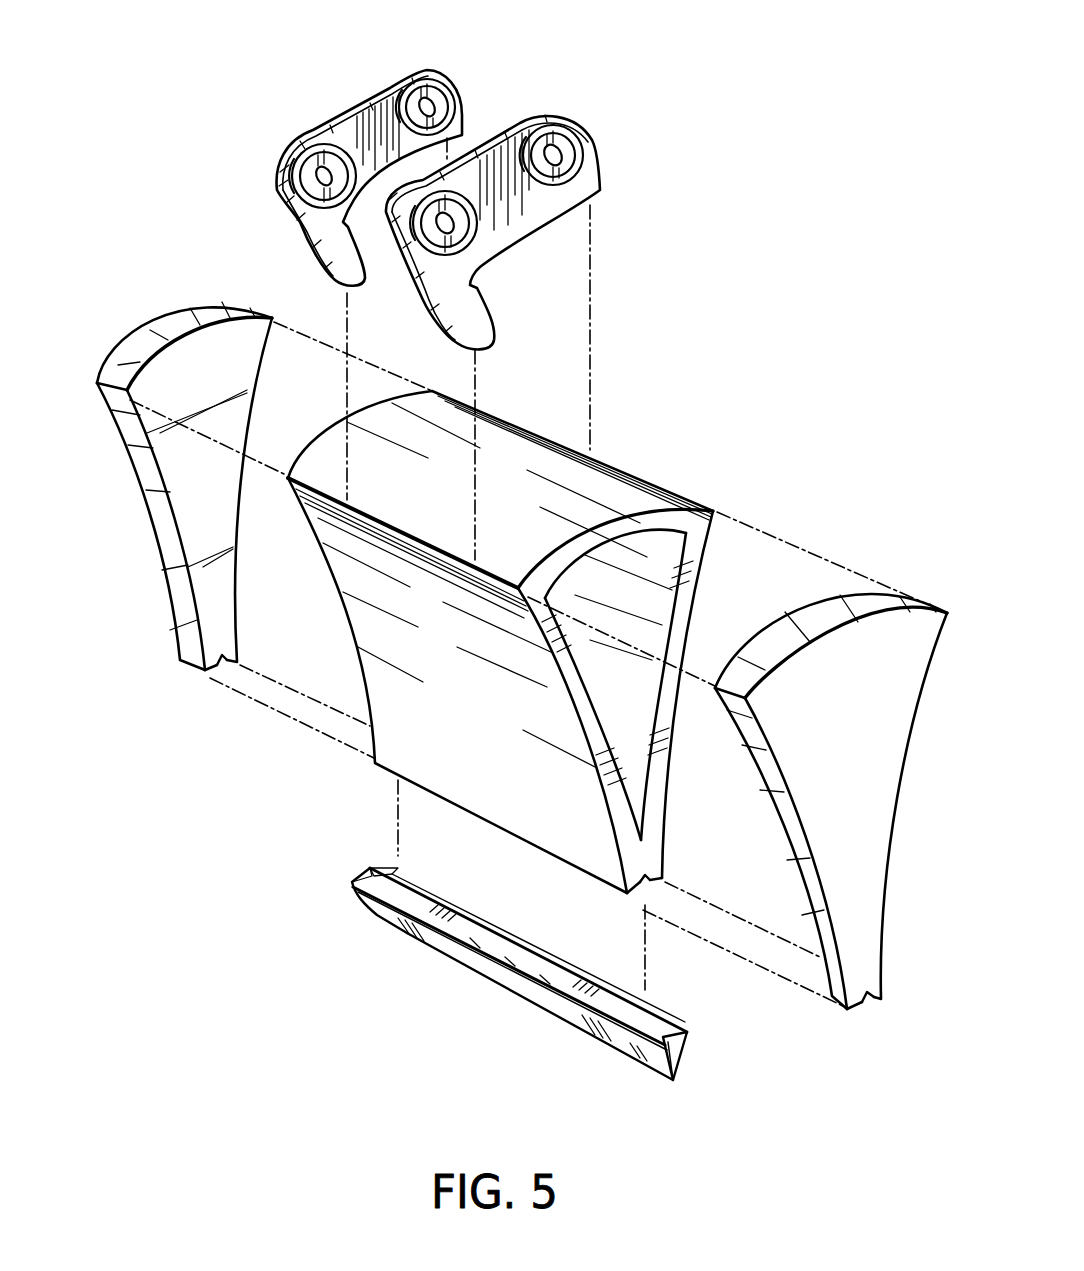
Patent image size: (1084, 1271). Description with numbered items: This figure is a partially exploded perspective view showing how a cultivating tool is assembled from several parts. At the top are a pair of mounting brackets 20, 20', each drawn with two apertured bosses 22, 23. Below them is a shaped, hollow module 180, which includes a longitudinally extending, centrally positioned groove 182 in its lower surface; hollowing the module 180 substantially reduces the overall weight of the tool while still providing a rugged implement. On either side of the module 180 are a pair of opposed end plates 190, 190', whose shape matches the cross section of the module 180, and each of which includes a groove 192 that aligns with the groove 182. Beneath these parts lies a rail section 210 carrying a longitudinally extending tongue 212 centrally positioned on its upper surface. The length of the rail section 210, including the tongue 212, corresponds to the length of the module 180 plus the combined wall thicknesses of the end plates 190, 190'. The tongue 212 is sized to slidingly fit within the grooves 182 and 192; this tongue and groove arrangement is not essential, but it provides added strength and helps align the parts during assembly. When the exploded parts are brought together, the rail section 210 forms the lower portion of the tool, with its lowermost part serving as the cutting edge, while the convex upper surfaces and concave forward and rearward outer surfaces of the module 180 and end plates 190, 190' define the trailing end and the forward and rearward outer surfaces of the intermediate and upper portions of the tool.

The mounting bracket 20 is at (393, 158).
The mounting bracket 20' is at (509, 211).
The upper aperture boss 22 is at (440, 98).
The lower aperture boss 23 is at (320, 197).
The shaped, hollow module 180 is at (410, 748).
The groove 182 is at (642, 885).
The end plate 190 is at (171, 486).
The end plate 190' is at (821, 801).
The groove 192 is at (223, 670).
The rail section 210 is at (490, 973).
The tongue 212 is at (370, 870).